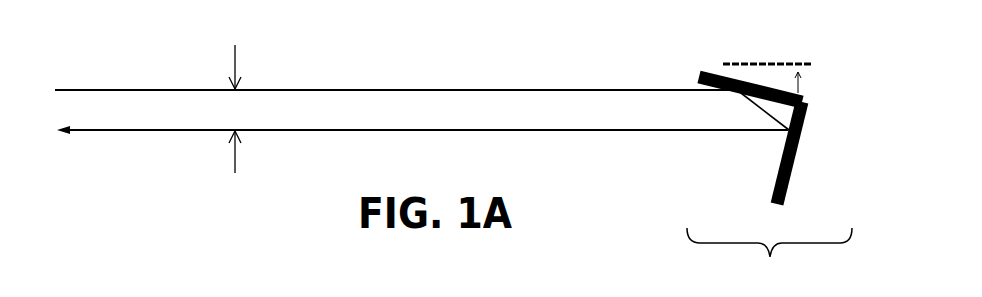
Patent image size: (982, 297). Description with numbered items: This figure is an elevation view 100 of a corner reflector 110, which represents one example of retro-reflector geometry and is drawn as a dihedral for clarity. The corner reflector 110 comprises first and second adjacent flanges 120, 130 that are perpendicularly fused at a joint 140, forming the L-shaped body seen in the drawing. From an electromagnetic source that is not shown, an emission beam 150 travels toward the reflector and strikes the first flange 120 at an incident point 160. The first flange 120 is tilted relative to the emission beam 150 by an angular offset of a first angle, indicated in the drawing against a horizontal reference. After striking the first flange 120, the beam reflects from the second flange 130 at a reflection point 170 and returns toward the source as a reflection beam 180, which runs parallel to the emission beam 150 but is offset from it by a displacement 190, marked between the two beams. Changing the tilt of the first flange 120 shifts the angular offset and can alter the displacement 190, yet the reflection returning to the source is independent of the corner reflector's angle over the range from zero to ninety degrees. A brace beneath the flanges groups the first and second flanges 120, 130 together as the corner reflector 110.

The elevation view 100 is at (128, 181).
The corner reflector 110 is at (769, 259).
The first flange 120 is at (708, 70).
The second flange 130 is at (798, 148).
The joint 140 is at (813, 100).
The emission beam 150 is at (392, 90).
The incident point 160 is at (708, 109).
The reflection point 170 is at (762, 142).
The reflection beam 180 is at (567, 133).
The displacement 190 is at (237, 126).